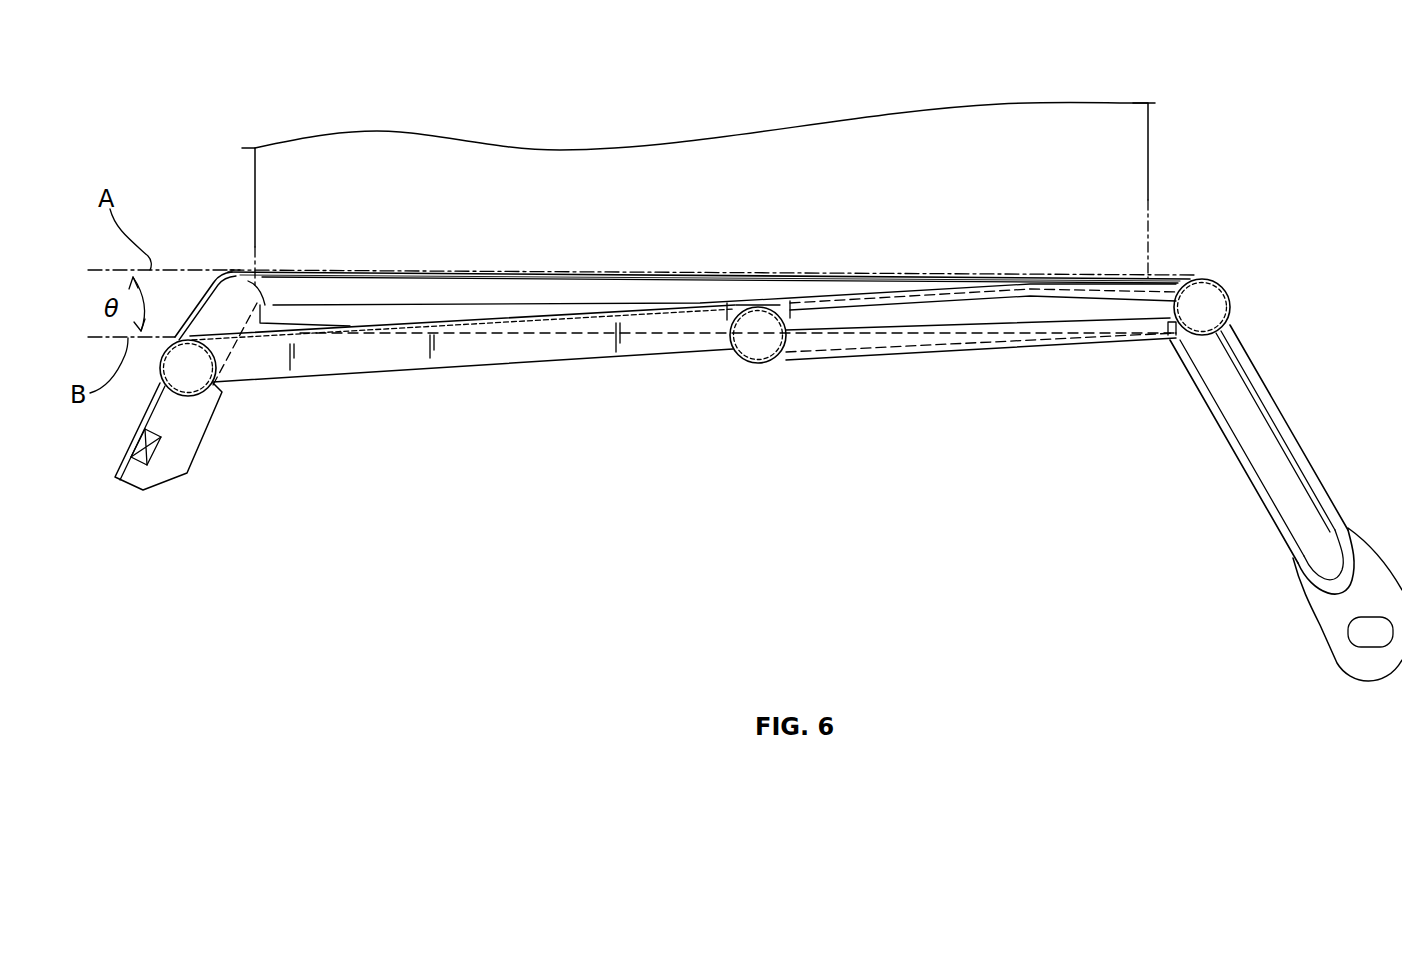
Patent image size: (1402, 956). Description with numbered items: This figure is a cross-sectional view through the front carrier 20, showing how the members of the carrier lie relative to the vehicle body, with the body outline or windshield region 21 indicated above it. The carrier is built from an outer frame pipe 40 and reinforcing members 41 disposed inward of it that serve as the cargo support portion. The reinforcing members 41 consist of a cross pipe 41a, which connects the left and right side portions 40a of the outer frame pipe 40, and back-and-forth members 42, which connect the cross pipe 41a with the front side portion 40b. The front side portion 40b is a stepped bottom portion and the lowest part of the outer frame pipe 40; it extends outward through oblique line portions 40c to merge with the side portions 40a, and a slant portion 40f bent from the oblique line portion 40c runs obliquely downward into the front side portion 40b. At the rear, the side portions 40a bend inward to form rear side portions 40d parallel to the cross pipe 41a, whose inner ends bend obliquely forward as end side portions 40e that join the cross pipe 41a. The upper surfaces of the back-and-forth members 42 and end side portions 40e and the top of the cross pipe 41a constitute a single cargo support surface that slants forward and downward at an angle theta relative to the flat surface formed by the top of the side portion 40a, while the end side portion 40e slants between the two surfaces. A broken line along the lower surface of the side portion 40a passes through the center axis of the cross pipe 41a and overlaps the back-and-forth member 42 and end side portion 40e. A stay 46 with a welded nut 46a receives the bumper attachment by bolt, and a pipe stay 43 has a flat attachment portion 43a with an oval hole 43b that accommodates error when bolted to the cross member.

The front carrier 20 is at (226, 198).
The windshield 21 is at (725, 150).
The outer frame pipe 40 is at (765, 272).
The side portion 40a is at (417, 272).
The front side portion 40b is at (219, 380).
The oblique line portion 40c is at (224, 276).
The rear side portion 40d is at (1218, 279).
The end side portion 40e is at (950, 321).
The slant portion 40f is at (196, 308).
The reinforcing member 41 is at (550, 378).
The cross pipe 41a is at (742, 349).
The back-and-forth member 42 is at (445, 366).
The stay 43 is at (1226, 407).
The flat attachment portion 43a is at (1307, 593).
The oval hole 43b is at (1358, 640).
The stay 46 is at (132, 413).
The nut 46a is at (150, 452).